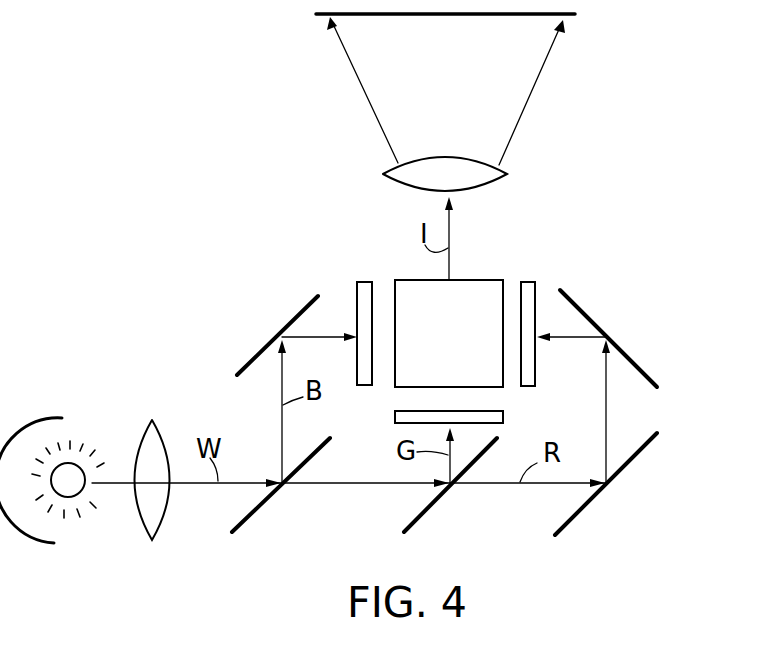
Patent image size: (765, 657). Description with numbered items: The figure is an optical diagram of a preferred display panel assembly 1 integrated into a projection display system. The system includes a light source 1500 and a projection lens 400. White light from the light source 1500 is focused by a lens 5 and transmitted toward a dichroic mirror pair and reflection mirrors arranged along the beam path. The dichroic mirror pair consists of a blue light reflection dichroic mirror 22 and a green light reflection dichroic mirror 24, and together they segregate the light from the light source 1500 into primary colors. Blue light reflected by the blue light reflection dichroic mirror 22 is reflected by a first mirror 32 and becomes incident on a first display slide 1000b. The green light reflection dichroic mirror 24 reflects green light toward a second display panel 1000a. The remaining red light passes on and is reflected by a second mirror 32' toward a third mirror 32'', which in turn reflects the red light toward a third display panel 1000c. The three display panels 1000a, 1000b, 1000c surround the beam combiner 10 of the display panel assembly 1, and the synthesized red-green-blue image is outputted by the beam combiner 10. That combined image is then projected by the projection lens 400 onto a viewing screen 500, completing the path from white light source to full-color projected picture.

The display panel assembly 1 is at (510, 248).
The lens 5 is at (147, 530).
The beam combiner 10 is at (459, 345).
The blue light reflection dichroic mirror 22 is at (258, 508).
The green light reflection dichroic mirror 24 is at (427, 508).
The first mirror 32 is at (257, 335).
The second mirror 32' is at (606, 492).
The third mirror 32'' is at (631, 338).
The projection lens 400 is at (507, 175).
The viewing screen 500 is at (550, 15).
The second display panel 1000a is at (503, 413).
The first display slide 1000b is at (363, 280).
The third display panel 1000c is at (523, 280).
The light source 1500 is at (90, 425).